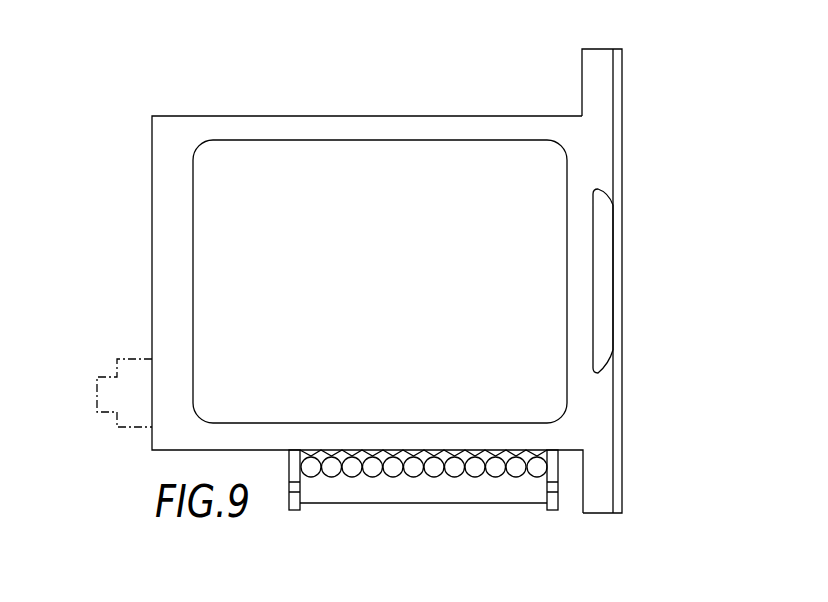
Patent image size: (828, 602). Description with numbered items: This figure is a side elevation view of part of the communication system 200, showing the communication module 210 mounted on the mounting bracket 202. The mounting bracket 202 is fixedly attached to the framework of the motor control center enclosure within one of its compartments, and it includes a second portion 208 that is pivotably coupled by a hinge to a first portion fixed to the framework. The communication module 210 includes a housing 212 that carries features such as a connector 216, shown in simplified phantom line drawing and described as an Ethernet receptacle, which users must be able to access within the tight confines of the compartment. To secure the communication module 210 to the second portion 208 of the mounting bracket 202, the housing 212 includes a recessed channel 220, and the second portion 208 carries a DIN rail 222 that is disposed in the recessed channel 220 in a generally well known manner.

The communication system 200 is at (516, 539).
The mounting bracket 202 is at (638, 79).
The second portion 208 is at (617, 145).
The communication module 210 is at (211, 88).
The housing 212 is at (292, 127).
The connector 216 is at (128, 355).
The recessed channel 220 is at (594, 283).
The DIN rail 222 is at (603, 234).